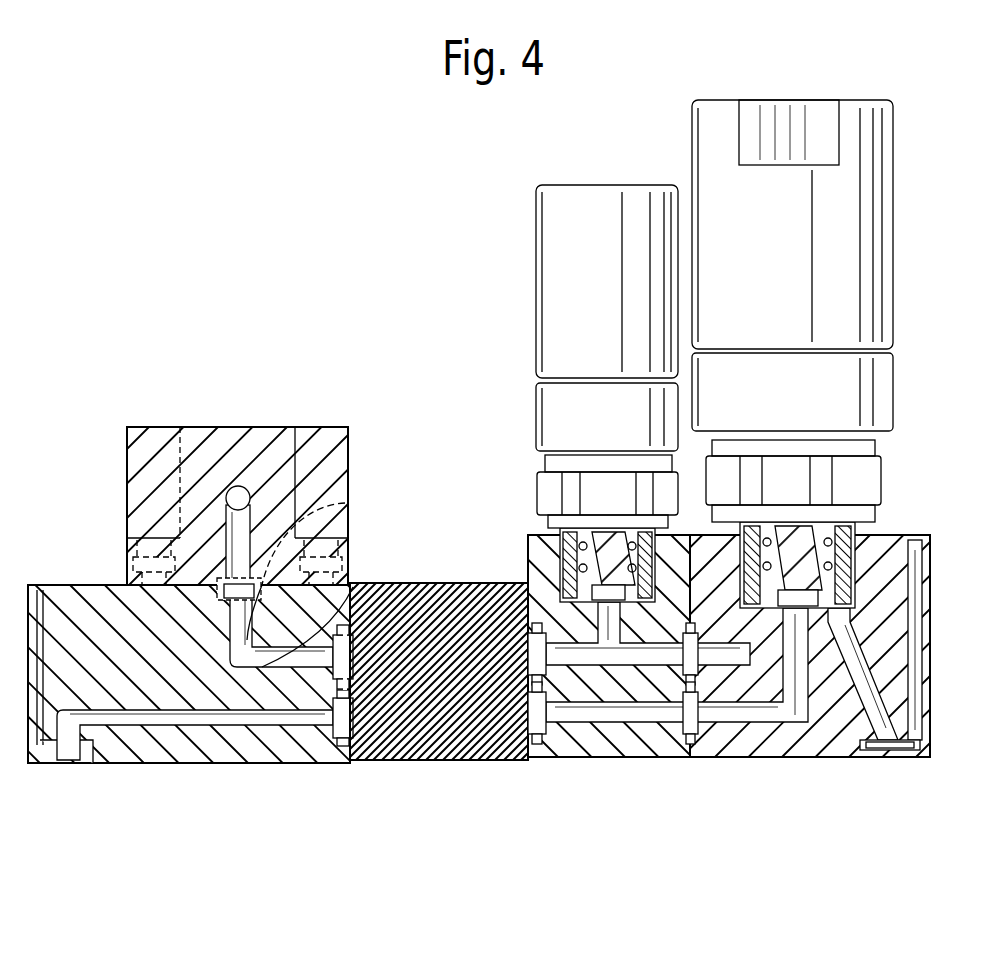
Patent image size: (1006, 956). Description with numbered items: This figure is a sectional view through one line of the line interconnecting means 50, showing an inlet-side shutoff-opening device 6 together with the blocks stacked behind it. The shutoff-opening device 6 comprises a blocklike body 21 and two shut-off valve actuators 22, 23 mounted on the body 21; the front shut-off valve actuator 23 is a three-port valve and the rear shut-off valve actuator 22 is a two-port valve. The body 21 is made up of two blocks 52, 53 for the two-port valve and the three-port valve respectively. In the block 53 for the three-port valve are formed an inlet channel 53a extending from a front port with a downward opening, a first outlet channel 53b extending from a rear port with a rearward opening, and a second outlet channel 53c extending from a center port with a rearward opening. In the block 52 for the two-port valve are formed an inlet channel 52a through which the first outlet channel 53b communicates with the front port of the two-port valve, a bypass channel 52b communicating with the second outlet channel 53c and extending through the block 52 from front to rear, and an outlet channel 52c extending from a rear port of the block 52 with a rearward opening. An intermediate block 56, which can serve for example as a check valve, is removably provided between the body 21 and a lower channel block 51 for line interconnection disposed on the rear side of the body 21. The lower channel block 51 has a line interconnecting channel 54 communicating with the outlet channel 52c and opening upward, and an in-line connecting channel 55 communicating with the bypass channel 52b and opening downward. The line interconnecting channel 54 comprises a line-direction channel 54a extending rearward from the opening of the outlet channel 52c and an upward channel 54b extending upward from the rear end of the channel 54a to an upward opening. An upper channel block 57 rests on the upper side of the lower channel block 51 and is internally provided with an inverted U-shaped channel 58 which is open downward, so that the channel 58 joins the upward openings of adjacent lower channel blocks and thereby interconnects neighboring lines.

The inlet-side shutoff-opening device 6 is at (712, 307).
The body 21 is at (723, 681).
The rear shut-off valve actuator 22 is at (555, 262).
The front shut-off valve actuator 23 is at (865, 217).
The line interconnecting means 50 is at (247, 511).
The lower channel block 51 is at (68, 600).
The block for the 2-port valve 52 is at (588, 747).
The inlet channel 52a is at (638, 662).
The bypass channel 52b is at (565, 712).
The outlet channel 52c is at (540, 625).
The block for the 3-port valve 53 is at (847, 740).
The inlet channel 53a is at (857, 690).
The first outlet channel 53b is at (720, 660).
The second outlet channel 53c is at (773, 713).
The line interconnecting channel 54 is at (345, 615).
The line-direction channel 54a is at (255, 669).
The upward channel 54b is at (342, 506).
The in-line connecting channel 55 is at (170, 726).
The intermediate block 56 is at (400, 735).
The upper channel block 57 is at (230, 427).
The inverted U-shaped channel 58 is at (225, 535).